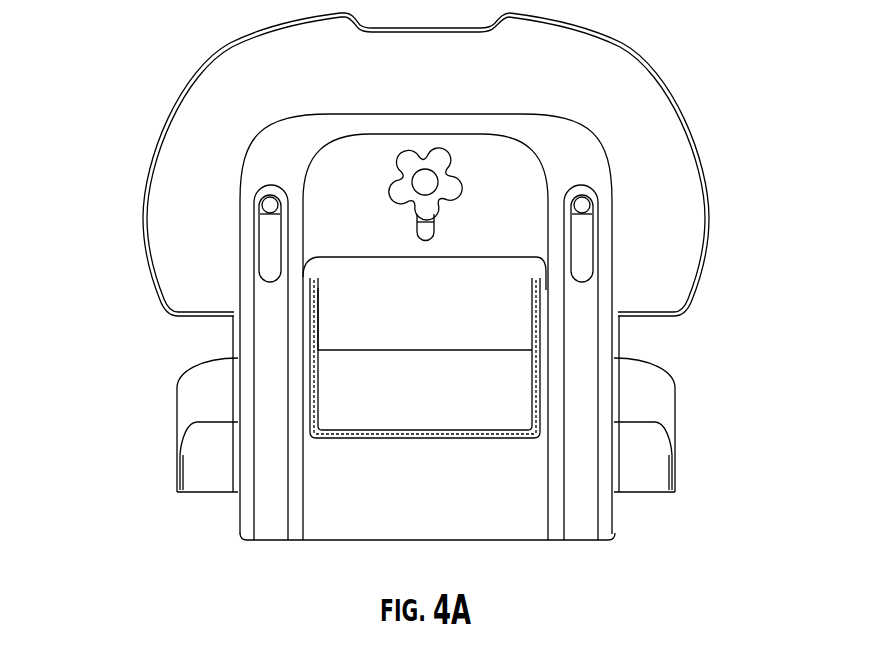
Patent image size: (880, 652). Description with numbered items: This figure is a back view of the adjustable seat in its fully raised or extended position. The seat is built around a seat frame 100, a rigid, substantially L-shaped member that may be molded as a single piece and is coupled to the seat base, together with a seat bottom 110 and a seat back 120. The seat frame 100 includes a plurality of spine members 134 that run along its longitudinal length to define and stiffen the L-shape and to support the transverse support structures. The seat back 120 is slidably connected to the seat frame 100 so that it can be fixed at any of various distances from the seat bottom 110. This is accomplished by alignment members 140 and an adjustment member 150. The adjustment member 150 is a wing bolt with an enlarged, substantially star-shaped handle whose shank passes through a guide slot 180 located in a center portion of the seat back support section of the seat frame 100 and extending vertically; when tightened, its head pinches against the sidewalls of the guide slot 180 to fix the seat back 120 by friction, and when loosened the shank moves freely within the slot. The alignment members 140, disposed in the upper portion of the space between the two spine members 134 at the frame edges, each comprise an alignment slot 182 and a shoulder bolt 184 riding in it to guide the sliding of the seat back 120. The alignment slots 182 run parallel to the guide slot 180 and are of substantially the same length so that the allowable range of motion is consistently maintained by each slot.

The seat frame 100 is at (427, 376).
The seat bottom 110 is at (375, 429).
The seat back 120 is at (373, 164).
The spine members 134 is at (407, 359).
The alignment members 140 is at (389, 305).
The adjustment member 150 is at (473, 147).
The guide slot 180 is at (424, 339).
The alignment slots 182 is at (412, 290).
The shoulder bolts 184 is at (422, 150).